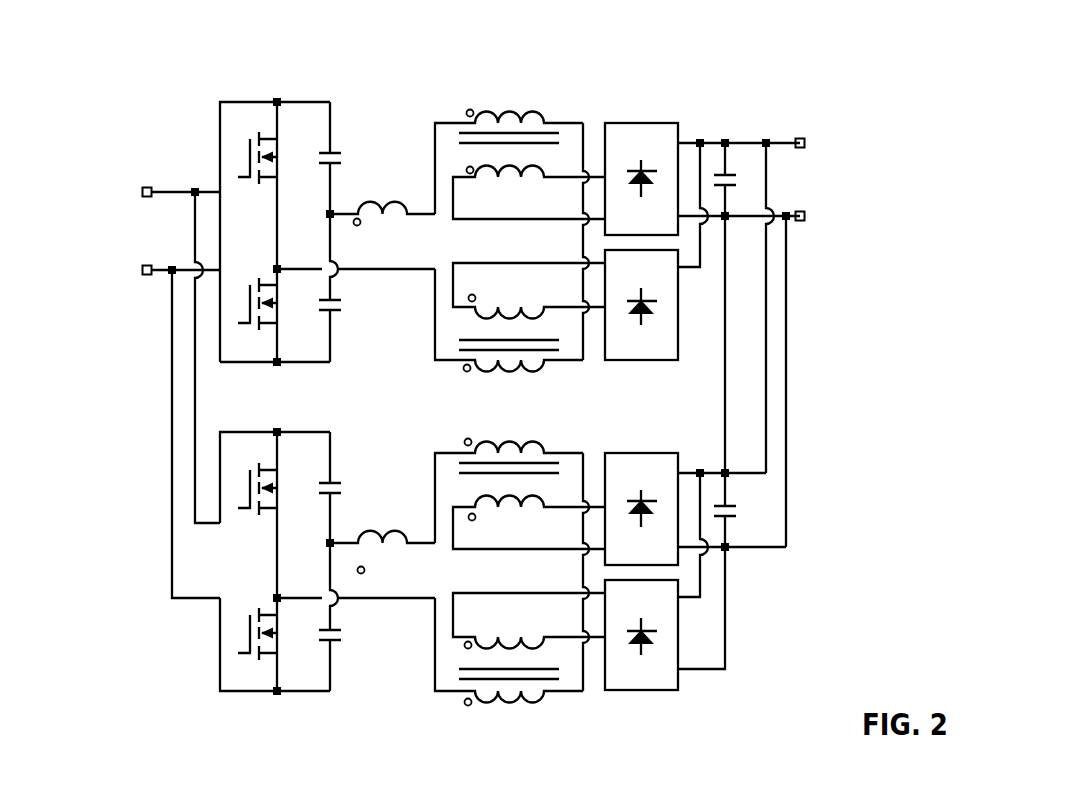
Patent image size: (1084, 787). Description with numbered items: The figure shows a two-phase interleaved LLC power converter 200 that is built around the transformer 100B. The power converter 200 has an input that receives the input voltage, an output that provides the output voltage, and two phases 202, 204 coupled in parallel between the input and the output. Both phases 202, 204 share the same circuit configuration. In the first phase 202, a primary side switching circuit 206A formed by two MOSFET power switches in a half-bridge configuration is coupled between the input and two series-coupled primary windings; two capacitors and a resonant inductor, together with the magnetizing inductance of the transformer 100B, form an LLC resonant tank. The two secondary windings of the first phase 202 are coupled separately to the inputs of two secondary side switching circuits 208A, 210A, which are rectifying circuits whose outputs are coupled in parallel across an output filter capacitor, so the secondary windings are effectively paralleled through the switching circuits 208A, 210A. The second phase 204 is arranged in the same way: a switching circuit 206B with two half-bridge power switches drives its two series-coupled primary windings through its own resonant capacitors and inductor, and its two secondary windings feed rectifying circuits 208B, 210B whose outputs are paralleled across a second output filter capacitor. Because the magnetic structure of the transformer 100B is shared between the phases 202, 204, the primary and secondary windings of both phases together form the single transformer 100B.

The two-phase interleaved LLC power converter 200 is at (313, 50).
The phase 202 is at (732, 115).
The phase 204 is at (747, 662).
The switching circuit 206A is at (242, 93).
The switching circuit 206B is at (242, 413).
The switching circuit 208A is at (623, 123).
The switching circuit 208B is at (640, 453).
The switching circuit 210A is at (642, 360).
The switching circuit 210B is at (640, 690).
The transformer 100B is at (418, 352).